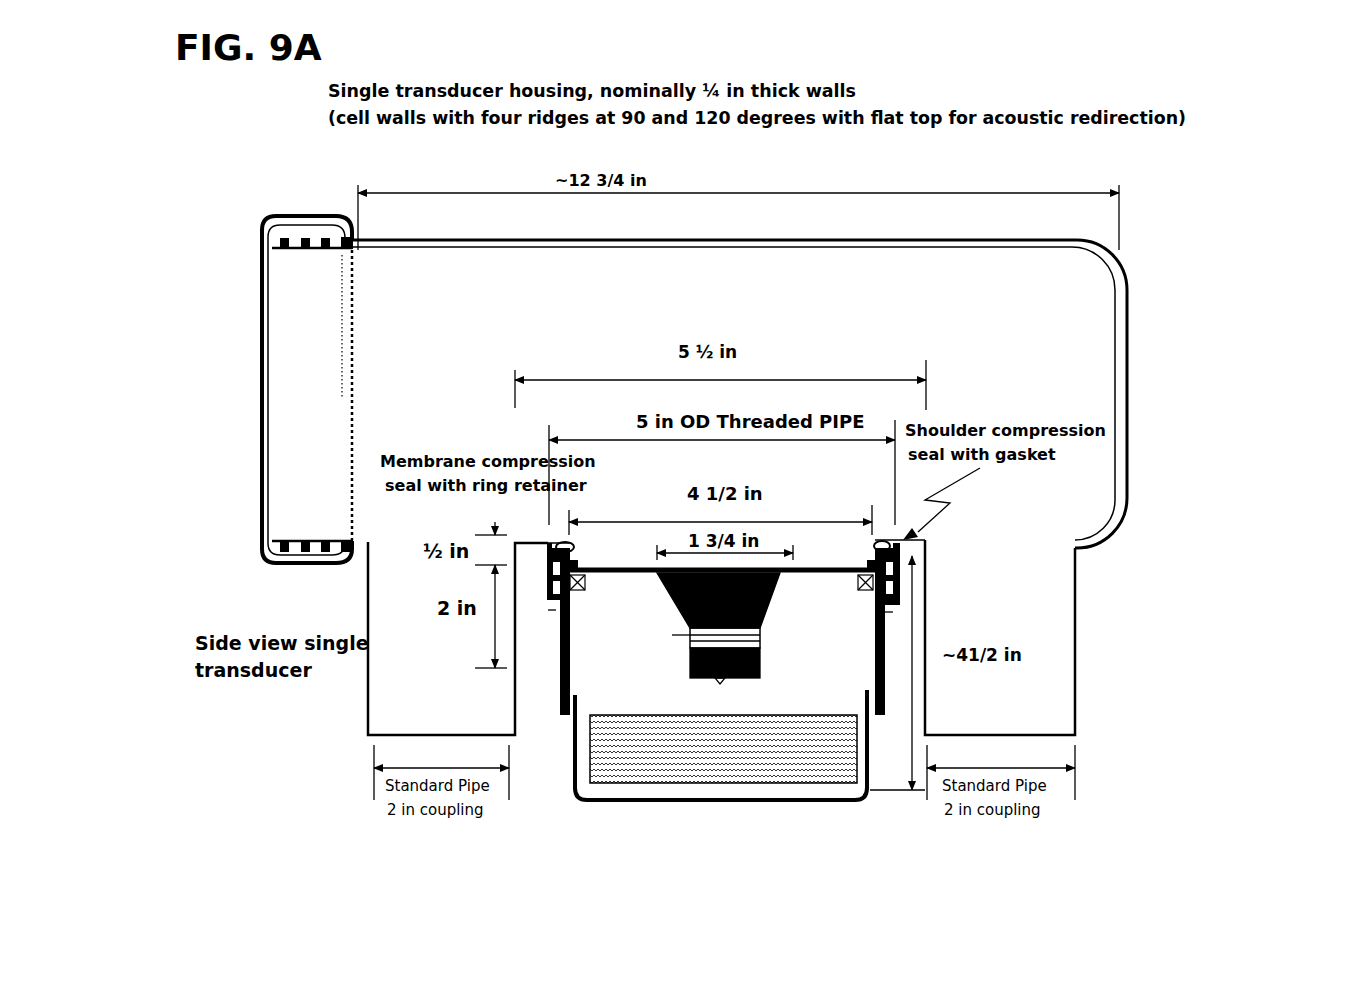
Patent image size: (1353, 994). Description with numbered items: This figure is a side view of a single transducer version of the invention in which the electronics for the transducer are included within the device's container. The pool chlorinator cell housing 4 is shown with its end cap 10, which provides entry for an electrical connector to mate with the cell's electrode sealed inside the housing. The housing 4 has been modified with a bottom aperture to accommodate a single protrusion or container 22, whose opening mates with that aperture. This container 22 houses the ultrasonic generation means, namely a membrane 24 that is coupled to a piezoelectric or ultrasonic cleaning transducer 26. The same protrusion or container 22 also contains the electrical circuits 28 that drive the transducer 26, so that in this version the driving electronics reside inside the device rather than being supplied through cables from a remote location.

The housing 4 is at (1127, 360).
The end cap 10 is at (295, 397).
The container 22 is at (585, 803).
The membrane 24 is at (620, 573).
The ultrasonic cleaning transducer 26 is at (779, 610).
The electrical circuits 28 is at (832, 775).